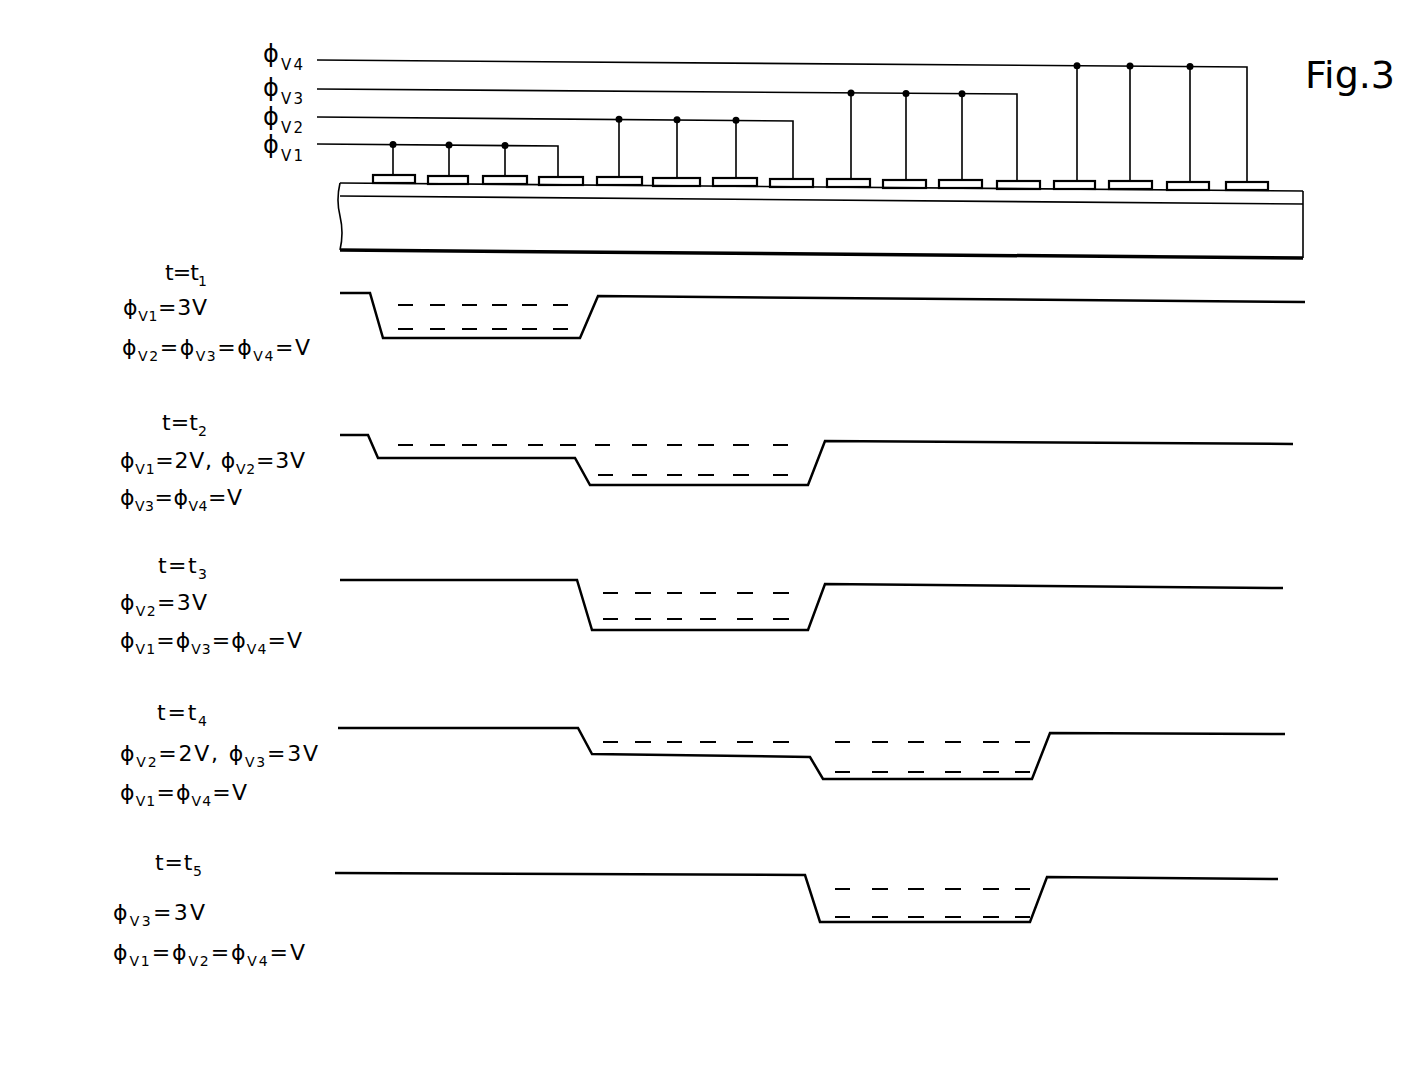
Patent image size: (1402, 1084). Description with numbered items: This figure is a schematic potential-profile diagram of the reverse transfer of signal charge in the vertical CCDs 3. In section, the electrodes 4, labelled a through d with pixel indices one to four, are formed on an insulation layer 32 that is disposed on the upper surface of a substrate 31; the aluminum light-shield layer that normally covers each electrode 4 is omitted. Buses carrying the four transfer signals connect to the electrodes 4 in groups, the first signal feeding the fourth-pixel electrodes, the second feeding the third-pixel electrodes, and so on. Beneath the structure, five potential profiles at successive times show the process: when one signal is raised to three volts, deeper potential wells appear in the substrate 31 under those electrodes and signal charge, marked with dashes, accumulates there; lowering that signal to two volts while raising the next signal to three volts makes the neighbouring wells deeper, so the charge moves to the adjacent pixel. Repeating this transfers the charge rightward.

The vertical CCD 3 is at (867, 226).
The substrate 31 is at (1360, 183).
The insulation layer 32 is at (1303, 197).
The electrodes 4 is at (390, 180).